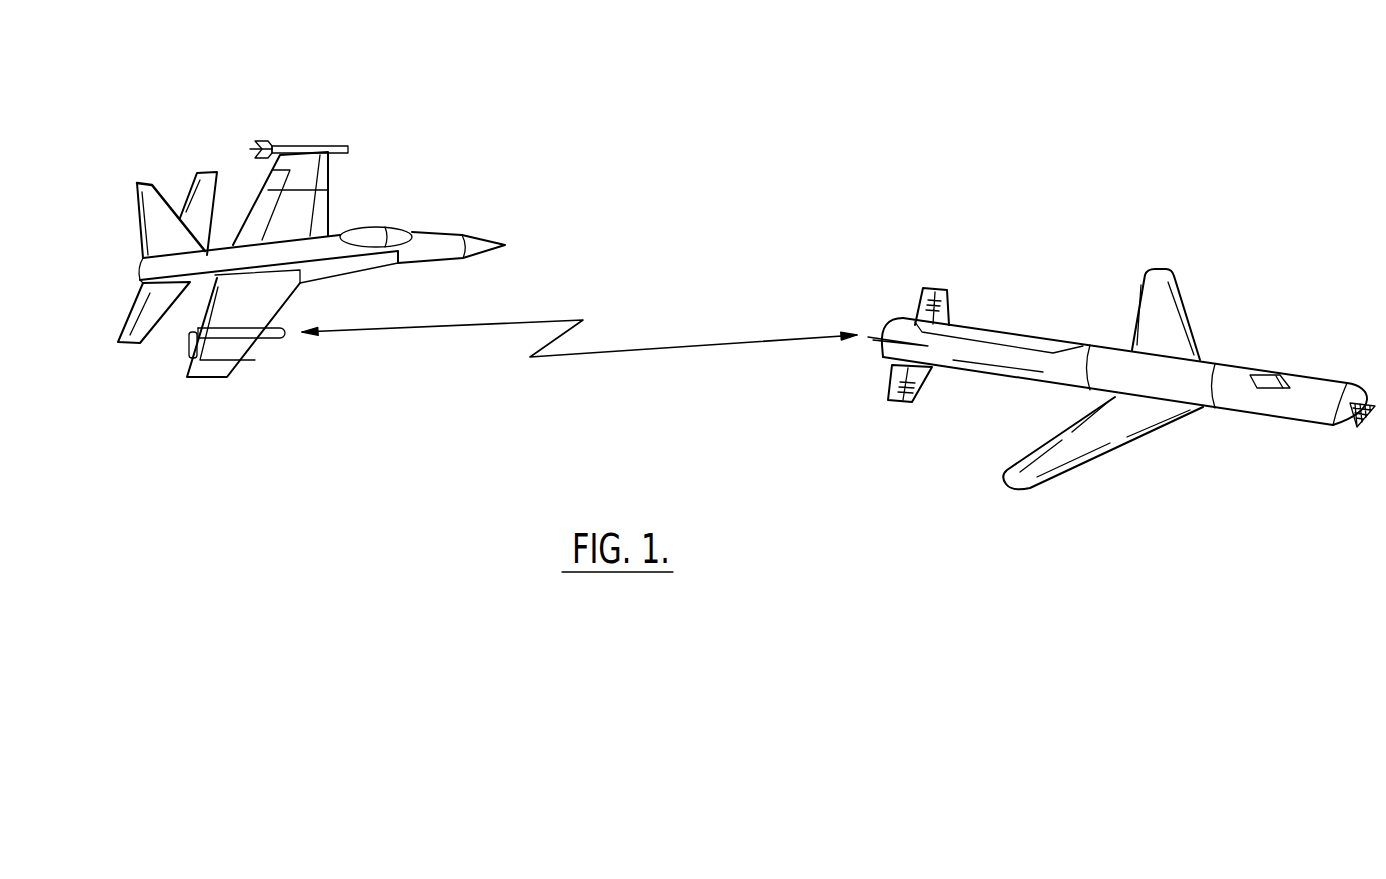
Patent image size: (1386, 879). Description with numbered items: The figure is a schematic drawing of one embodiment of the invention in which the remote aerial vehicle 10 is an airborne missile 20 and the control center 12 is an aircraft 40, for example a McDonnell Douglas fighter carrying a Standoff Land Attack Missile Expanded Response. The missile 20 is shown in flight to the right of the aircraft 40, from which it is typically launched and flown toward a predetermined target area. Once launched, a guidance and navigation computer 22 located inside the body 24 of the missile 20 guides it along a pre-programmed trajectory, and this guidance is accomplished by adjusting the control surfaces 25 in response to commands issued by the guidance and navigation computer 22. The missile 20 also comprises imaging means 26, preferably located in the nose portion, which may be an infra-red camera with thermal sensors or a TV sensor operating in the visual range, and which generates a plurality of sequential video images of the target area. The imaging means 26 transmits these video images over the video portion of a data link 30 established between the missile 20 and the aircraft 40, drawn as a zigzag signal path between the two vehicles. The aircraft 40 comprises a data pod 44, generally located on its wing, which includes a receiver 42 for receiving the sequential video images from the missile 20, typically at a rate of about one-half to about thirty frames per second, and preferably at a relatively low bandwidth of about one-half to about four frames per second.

The remote aerial vehicle 10 is at (1107, 303).
The control center 12 is at (314, 219).
The airborne missile 20 is at (1201, 309).
The guidance and navigation computer 22 is at (1298, 354).
The body 24 is at (999, 375).
The control surfaces 25 is at (894, 329).
The imaging means 26 is at (1346, 436).
The data link 30 is at (579, 374).
The aircraft 40 is at (203, 187).
The receiver 42 is at (283, 356).
The data pod 44 is at (152, 357).